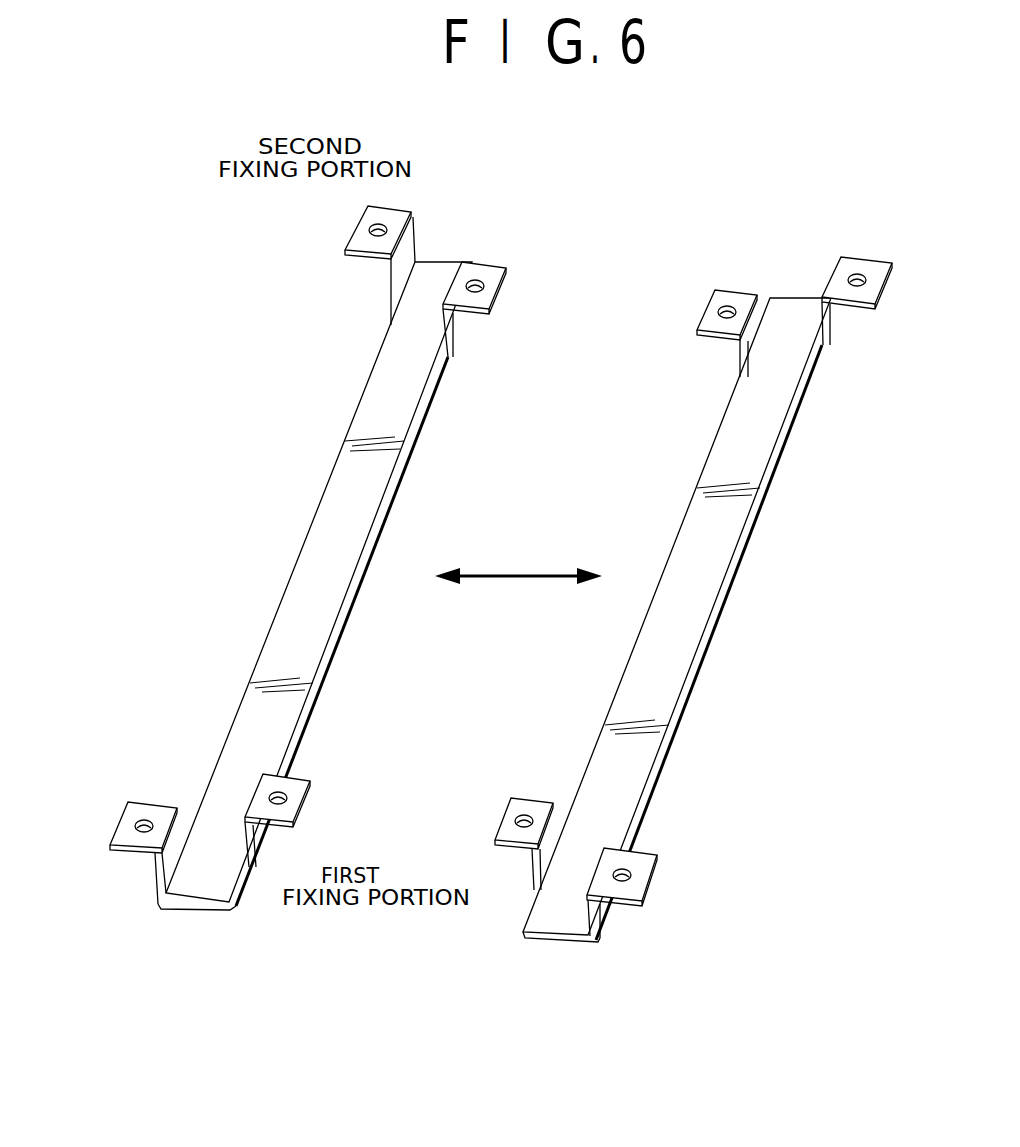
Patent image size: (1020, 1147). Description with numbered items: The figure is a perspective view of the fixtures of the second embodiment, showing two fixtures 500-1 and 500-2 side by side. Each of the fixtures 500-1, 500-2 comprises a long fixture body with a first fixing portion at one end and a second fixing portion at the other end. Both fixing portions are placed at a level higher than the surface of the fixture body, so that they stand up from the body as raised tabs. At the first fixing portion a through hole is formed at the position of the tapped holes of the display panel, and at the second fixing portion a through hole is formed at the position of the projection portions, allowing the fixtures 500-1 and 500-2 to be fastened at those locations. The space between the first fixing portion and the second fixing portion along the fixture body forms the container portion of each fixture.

The fixture 500-1 is at (461, 200).
The fixture 500-2 is at (813, 220).